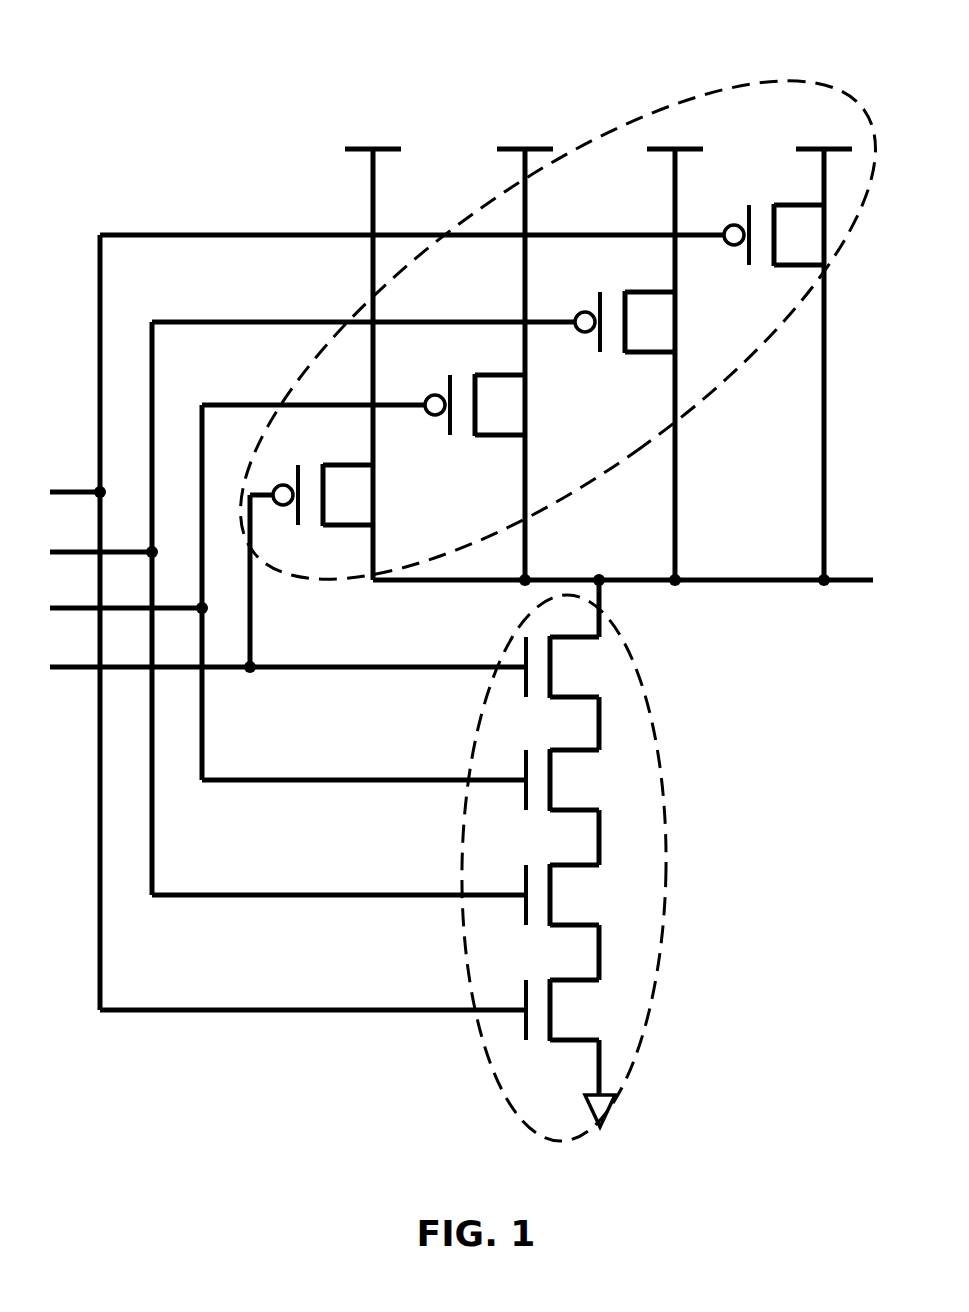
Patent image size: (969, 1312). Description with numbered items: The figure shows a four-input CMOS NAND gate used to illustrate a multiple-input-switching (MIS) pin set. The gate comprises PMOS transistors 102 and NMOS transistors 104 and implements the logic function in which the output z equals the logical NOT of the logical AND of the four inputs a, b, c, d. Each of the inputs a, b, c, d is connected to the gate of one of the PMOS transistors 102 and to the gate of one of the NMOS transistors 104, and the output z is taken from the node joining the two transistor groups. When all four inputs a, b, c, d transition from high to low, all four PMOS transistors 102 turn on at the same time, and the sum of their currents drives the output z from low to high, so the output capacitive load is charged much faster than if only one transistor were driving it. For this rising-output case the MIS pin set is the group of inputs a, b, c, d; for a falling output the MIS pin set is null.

The PMOS transistors 102 is at (800, 80).
The NMOS transistors 104 is at (657, 980).
The input a is at (376, 622).
The input b is at (301, 608).
The input c is at (277, 592).
The input d is at (277, 587).
The output z is at (633, 581).